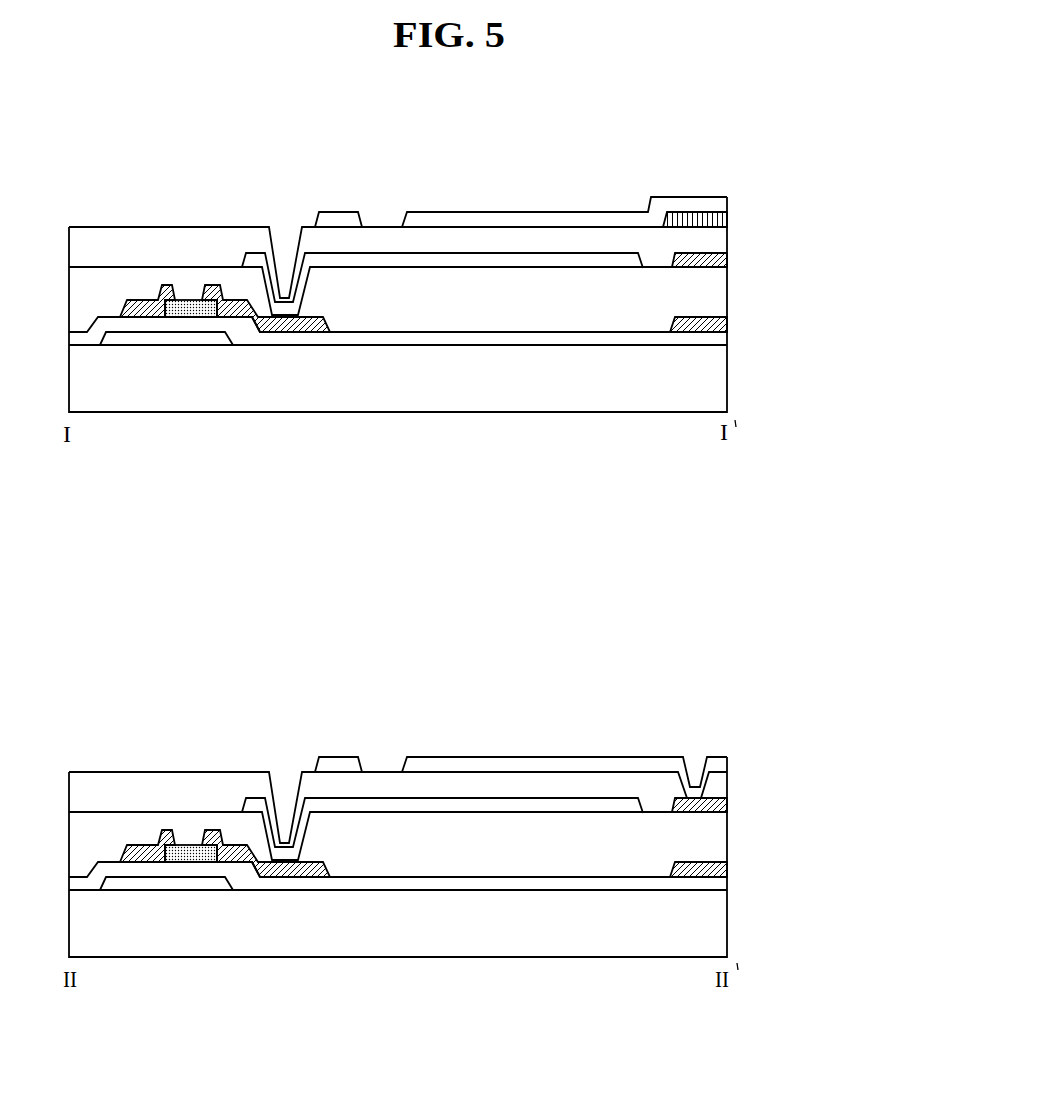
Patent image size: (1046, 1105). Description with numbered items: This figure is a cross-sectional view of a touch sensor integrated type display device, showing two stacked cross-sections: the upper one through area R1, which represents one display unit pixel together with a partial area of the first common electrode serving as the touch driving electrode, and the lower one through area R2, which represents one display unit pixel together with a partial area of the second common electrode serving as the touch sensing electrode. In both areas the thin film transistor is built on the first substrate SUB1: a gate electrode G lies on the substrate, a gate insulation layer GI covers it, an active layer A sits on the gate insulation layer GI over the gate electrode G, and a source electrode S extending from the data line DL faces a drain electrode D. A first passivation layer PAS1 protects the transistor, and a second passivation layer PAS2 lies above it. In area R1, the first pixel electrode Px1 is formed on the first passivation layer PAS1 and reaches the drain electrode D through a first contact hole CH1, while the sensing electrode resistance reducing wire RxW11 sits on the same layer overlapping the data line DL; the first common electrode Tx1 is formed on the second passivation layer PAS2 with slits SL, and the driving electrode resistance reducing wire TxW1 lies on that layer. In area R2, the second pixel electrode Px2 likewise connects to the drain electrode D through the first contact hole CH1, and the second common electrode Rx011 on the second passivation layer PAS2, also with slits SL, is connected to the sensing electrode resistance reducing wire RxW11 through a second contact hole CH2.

The area R1 is at (93, 150).
The area R2 is at (91, 695).
The first substrate SUB1 is at (718, 385).
The gate insulation layer GI is at (718, 343).
The gate electrode G is at (170, 340).
The active layer A is at (197, 317).
The source electrode S is at (132, 312).
The drain electrode D is at (260, 317).
The data line DL is at (718, 325).
The first passivation layer PAS1 is at (718, 288).
The second passivation layer PAS2 is at (715, 235).
The first pixel electrode Px1 is at (560, 262).
The second pixel electrode Px2 is at (598, 805).
The sensing electrode resistance reducing wire RxW11 is at (718, 260).
The driving electrode resistance reducing wire TxW1 is at (713, 217).
The first contact hole CH1 is at (287, 238).
The second contact hole CH2 is at (696, 752).
The slit SL is at (382, 222).
The first common electrode (touch driving electrode) Tx1 is at (342, 215).
The second common electrode (touch sensing electrode) Rx011 is at (340, 760).